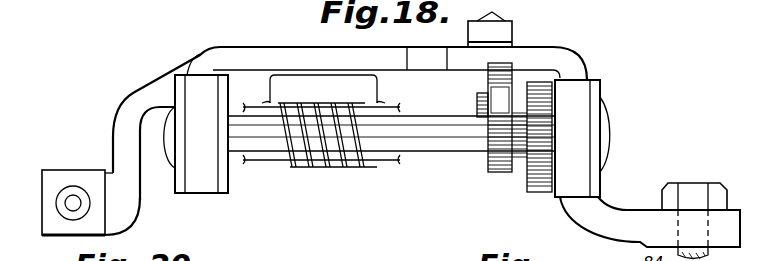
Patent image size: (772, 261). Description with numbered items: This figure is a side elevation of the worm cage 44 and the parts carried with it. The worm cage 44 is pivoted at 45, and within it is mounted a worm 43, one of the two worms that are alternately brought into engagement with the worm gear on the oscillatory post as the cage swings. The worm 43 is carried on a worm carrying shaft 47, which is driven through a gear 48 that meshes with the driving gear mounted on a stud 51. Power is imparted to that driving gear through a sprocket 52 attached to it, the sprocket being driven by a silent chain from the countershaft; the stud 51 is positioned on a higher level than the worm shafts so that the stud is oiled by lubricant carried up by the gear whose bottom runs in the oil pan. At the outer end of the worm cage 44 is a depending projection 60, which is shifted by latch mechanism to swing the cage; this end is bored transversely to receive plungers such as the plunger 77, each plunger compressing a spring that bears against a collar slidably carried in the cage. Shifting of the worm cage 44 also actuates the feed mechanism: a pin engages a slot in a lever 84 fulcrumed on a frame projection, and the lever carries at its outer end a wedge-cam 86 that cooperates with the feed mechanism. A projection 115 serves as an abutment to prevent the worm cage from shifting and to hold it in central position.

The worm cage 44 is at (283, 53).
The depending projection 60 is at (43, 193).
The plunger 77 is at (73, 195).
The worm carrying shaft 47 is at (435, 143).
The worm 43 is at (309, 170).
The sprocket 52 is at (488, 85).
The stud 51 is at (477, 103).
The gear 48 is at (537, 187).
The lever 84 is at (503, 31).
The wedge-cam 86 is at (495, 14).
The projection 115 is at (423, 52).
The pivot (fulcrum of the worm cage) 45 is at (697, 192).